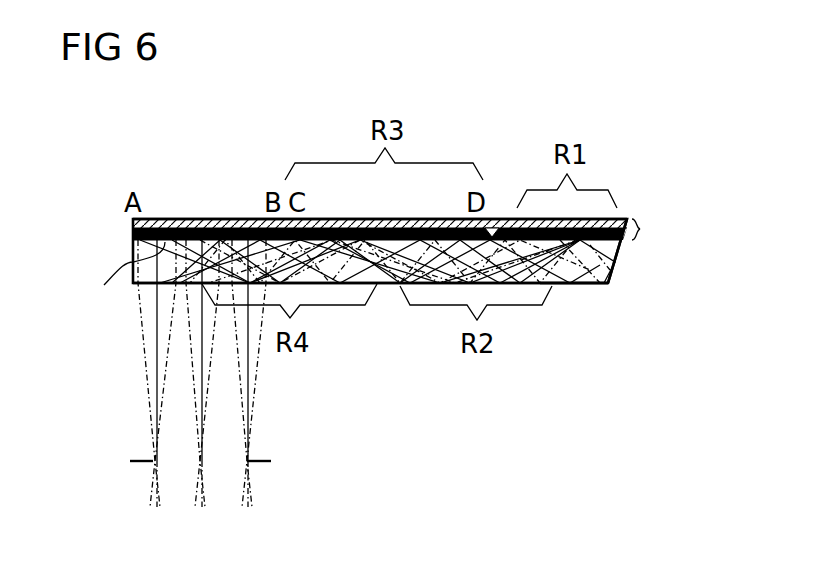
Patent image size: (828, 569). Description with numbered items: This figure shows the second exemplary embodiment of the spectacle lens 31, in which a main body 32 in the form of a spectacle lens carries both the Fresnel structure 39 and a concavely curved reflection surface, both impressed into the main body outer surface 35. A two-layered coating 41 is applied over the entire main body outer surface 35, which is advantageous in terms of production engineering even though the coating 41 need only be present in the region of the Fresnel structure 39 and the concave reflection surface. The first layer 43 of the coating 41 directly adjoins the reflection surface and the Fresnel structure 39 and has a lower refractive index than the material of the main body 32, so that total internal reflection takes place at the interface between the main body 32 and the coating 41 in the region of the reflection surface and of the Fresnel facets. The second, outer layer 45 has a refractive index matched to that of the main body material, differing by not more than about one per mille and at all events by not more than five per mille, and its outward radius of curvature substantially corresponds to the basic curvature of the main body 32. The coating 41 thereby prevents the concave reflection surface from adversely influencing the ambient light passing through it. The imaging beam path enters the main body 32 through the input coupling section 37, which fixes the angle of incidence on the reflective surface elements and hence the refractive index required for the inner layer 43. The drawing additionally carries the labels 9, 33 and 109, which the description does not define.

The spectacle lens 31 is at (316, 124).
The light entrance surface 9 is at (170, 218).
The outer layer 45 is at (135, 222).
The first layer 43 is at (135, 234).
The Fresnel structure 39 is at (126, 280).
The two-layered coating 41 is at (656, 233).
The main body outer surface 35 is at (492, 234).
The input coupling section 37 is at (613, 268).
The main body 32 is at (385, 284).
The bottom surface end region 33 is at (584, 284).
The lens plane 109 is at (257, 461).